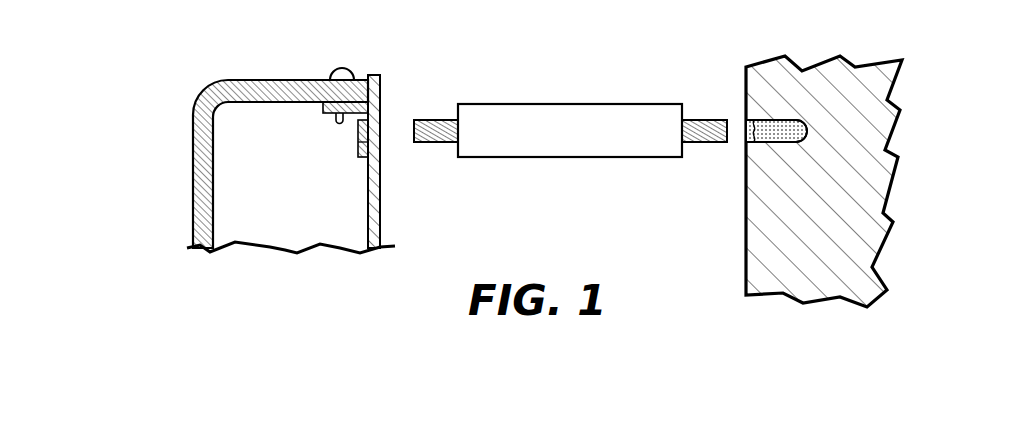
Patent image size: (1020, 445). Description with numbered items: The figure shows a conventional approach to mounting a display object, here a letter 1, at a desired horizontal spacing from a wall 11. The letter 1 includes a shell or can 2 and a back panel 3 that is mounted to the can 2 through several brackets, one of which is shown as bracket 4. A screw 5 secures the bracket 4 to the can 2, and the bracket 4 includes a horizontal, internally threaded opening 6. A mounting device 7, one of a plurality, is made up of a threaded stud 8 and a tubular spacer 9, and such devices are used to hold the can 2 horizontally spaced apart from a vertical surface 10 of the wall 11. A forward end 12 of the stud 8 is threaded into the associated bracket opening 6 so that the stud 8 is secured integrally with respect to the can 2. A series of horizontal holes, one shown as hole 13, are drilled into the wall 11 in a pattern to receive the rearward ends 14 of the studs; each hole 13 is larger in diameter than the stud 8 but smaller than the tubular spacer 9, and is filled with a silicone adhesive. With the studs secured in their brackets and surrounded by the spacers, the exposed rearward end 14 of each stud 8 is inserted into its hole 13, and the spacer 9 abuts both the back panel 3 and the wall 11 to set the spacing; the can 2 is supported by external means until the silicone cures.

The letter 1 is at (138, 153).
The can 2 is at (196, 105).
The back panel 3 is at (378, 205).
The bracket 4 is at (332, 113).
The screw 5 is at (342, 70).
The internally threaded opening 6 is at (360, 128).
The mounting device 7 is at (553, 68).
The threaded stud 8 is at (430, 142).
The tubular spacer 9 is at (566, 140).
The vertical surface 10 is at (746, 100).
The wall 11 is at (827, 72).
The forward end 12 is at (440, 118).
The hole 13 is at (796, 143).
The rearward end 14 is at (708, 142).